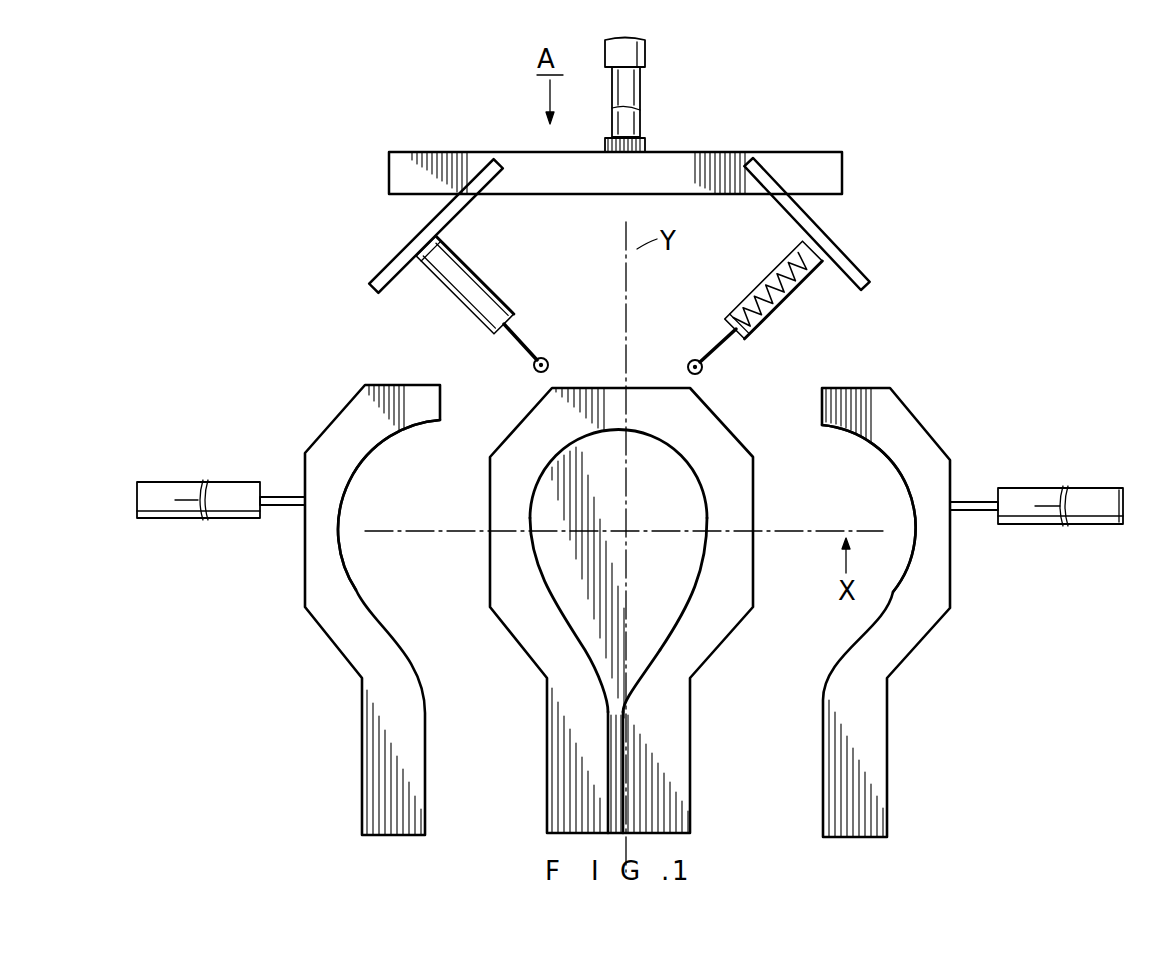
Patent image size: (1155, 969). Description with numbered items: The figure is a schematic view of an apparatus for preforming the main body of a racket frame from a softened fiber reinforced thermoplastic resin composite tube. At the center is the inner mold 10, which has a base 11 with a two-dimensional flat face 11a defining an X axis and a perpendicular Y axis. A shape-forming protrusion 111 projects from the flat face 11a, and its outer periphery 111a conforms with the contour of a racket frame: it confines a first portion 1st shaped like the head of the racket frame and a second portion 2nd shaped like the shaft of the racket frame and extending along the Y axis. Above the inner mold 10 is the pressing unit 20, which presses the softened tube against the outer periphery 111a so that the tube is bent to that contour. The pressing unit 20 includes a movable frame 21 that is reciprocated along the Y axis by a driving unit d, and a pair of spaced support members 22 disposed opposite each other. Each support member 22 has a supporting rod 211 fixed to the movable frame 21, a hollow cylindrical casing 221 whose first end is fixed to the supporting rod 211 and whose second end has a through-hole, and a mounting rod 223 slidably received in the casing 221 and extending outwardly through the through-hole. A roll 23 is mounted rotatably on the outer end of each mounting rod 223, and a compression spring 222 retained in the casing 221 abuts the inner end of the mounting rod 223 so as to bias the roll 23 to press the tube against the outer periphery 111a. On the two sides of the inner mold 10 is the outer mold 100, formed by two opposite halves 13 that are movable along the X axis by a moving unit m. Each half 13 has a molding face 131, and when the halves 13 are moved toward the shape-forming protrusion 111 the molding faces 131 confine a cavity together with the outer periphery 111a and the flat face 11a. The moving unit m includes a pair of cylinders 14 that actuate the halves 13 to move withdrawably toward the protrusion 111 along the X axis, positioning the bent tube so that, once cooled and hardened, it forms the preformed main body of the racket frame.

The outer mold 100 is at (977, 383).
The inner mold 10 is at (818, 491).
The base 11 is at (727, 637).
The flat face 11a is at (672, 632).
The shape-forming protrusion 111 is at (700, 575).
The outer periphery 111a is at (708, 558).
The first portion 1st is at (683, 467).
The second portion 2nd is at (623, 758).
The half 13 is at (342, 425).
The molding face 131 is at (360, 465).
The cylinder 14 is at (235, 518).
The moving unit m is at (1088, 480).
The pressing unit 20 is at (765, 145).
The movable frame 21 is at (687, 164).
The driving unit d is at (641, 92).
The supporting rod 211 is at (428, 238).
The support member 22 is at (498, 297).
The hollow cylindrical casing 221 is at (470, 271).
The compression spring 222 is at (802, 284).
The mounting rod 223 is at (527, 343).
The roll 23 is at (549, 364).